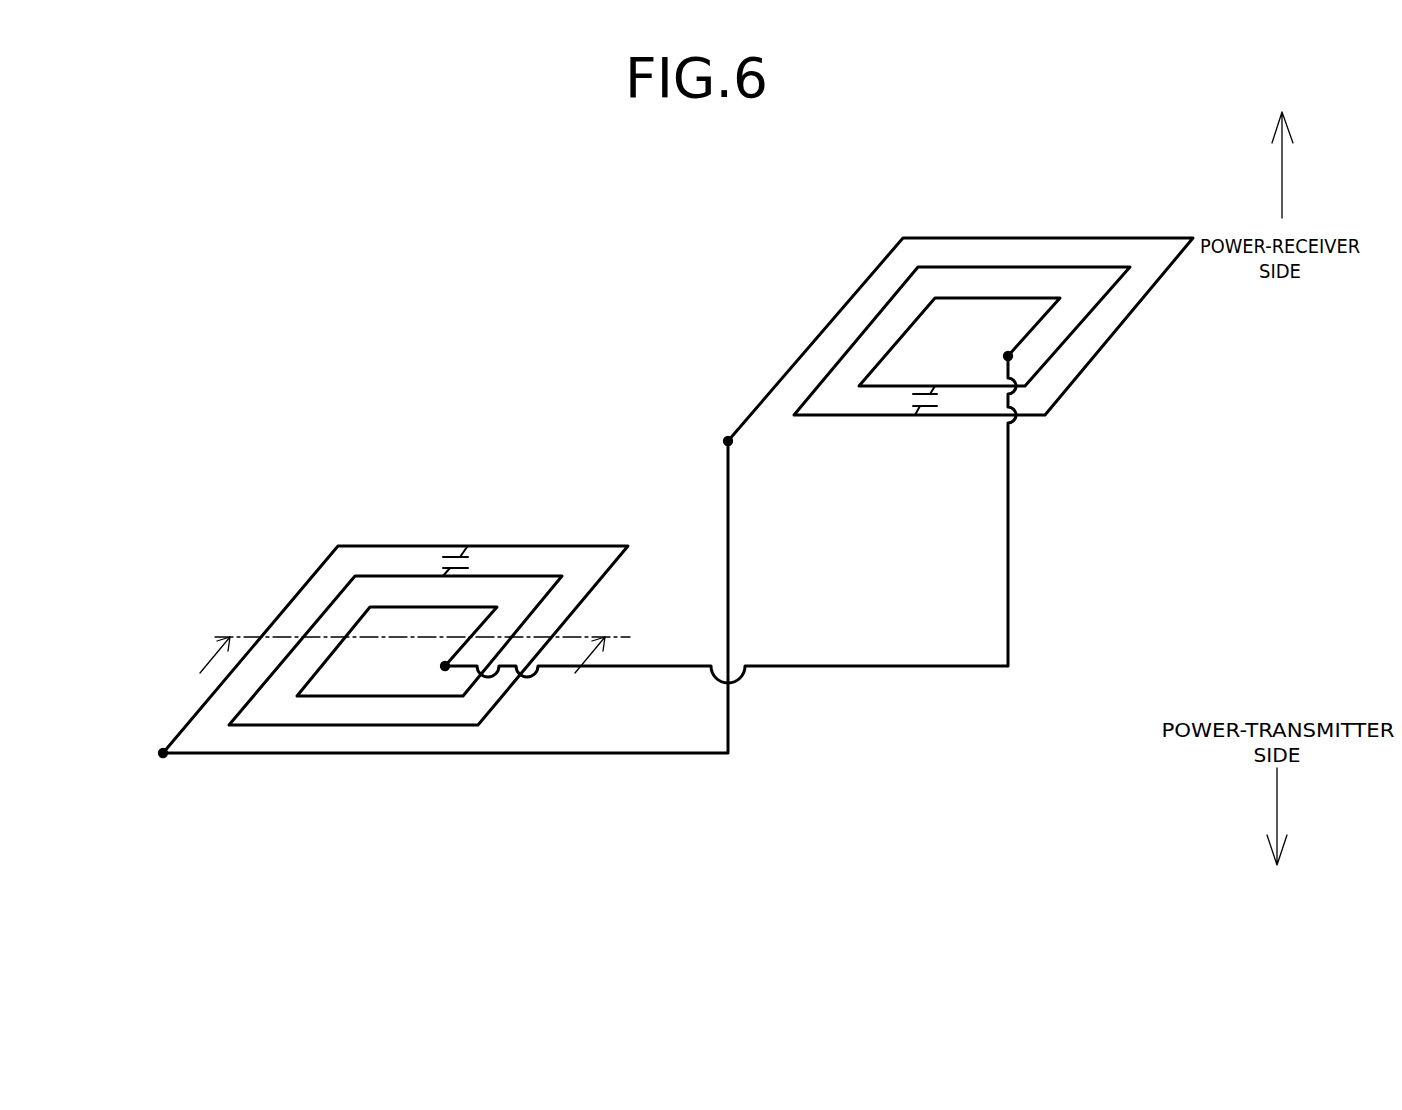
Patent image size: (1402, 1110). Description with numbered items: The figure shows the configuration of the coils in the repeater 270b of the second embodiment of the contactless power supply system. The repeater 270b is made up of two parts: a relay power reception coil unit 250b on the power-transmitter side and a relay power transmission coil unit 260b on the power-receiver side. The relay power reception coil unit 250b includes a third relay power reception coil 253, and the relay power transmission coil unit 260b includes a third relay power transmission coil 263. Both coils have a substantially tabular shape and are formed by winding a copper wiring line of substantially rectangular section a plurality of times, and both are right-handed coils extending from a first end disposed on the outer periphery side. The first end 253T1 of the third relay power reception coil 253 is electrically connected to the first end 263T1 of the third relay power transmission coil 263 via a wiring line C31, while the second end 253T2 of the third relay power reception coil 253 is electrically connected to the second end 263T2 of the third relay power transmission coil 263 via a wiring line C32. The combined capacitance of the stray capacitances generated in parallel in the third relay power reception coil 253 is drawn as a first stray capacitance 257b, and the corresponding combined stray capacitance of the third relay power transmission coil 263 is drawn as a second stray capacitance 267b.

The repeater 270b is at (650, 308).
The relay power reception coil unit 250b is at (490, 446).
The relay power transmission coil unit 260b is at (723, 340).
The third relay power reception coil 253 is at (284, 610).
The first end of the third relay power reception coil 253T1 is at (165, 758).
The second end of the third relay power reception coil 253T2 is at (448, 669).
The first stray capacitance 257b is at (449, 548).
The third relay power transmission coil 263 is at (1136, 309).
The first end of the third relay power transmission coil 263T1 is at (727, 442).
The second end of the third relay power transmission coil 263T2 is at (1007, 353).
The second stray capacitance 267b is at (927, 417).
The wiring line C31 is at (567, 753).
The wiring line C32 is at (1008, 580).